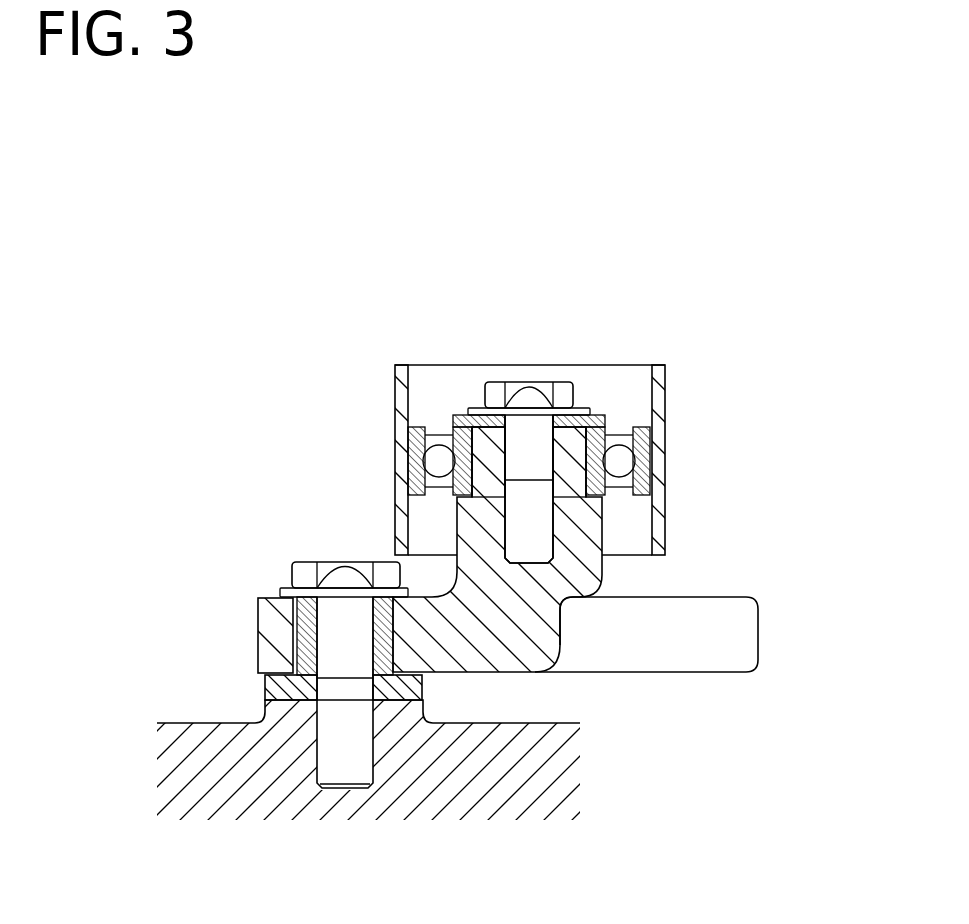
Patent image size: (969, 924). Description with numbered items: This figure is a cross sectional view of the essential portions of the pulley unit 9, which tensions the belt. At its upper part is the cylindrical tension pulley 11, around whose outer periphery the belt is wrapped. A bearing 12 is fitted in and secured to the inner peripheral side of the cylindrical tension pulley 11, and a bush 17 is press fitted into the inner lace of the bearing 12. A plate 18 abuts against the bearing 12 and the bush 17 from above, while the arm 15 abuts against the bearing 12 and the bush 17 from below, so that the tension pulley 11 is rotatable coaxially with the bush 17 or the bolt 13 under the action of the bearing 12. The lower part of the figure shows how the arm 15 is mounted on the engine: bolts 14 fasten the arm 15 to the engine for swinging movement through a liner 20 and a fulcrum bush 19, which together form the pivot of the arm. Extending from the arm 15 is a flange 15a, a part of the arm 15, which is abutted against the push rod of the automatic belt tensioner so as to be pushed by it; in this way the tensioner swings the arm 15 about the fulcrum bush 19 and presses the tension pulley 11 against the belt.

The pulley unit 9 is at (543, 297).
The tension pulley 11 is at (667, 465).
The bearing 12 is at (642, 424).
The bolt 13 is at (523, 390).
The bolts 14 is at (313, 562).
The arm 15 is at (592, 575).
The flange 15a is at (743, 640).
The bush 17 is at (487, 443).
The plate 18 is at (590, 417).
The fulcrum bush 19 is at (270, 690).
The liner 20 is at (283, 623).